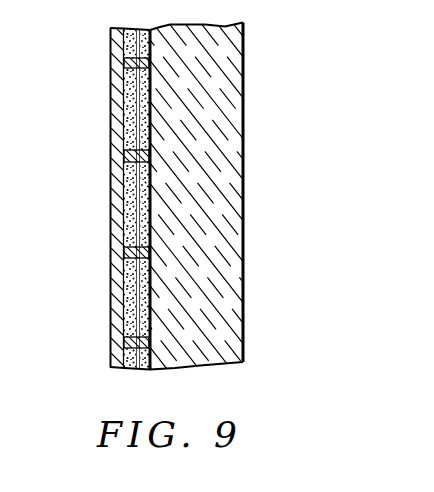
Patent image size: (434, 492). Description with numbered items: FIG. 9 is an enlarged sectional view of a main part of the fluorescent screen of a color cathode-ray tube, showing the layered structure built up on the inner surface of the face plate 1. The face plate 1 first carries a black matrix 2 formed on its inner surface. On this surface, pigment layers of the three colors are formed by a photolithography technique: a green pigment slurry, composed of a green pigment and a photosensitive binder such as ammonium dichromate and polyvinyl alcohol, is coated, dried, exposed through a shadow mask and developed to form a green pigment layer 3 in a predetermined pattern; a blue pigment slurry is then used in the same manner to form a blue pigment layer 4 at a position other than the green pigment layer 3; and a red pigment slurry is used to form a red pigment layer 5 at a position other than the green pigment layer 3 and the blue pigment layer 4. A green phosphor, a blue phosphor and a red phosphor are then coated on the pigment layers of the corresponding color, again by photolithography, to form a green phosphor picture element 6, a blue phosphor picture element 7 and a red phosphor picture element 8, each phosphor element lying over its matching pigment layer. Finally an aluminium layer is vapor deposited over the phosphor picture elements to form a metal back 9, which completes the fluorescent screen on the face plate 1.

The face plate 1 is at (230, 62).
The black matrix 2 is at (150, 157).
The green pigment layer 3 is at (128, 118).
The blue pigment layer 4 is at (130, 217).
The red pigment layer 5 is at (130, 313).
The green phosphor picture element 6 is at (128, 85).
The blue phosphor picture element 7 is at (130, 174).
The red phosphor picture element 8 is at (130, 277).
The metal back 9 is at (115, 44).